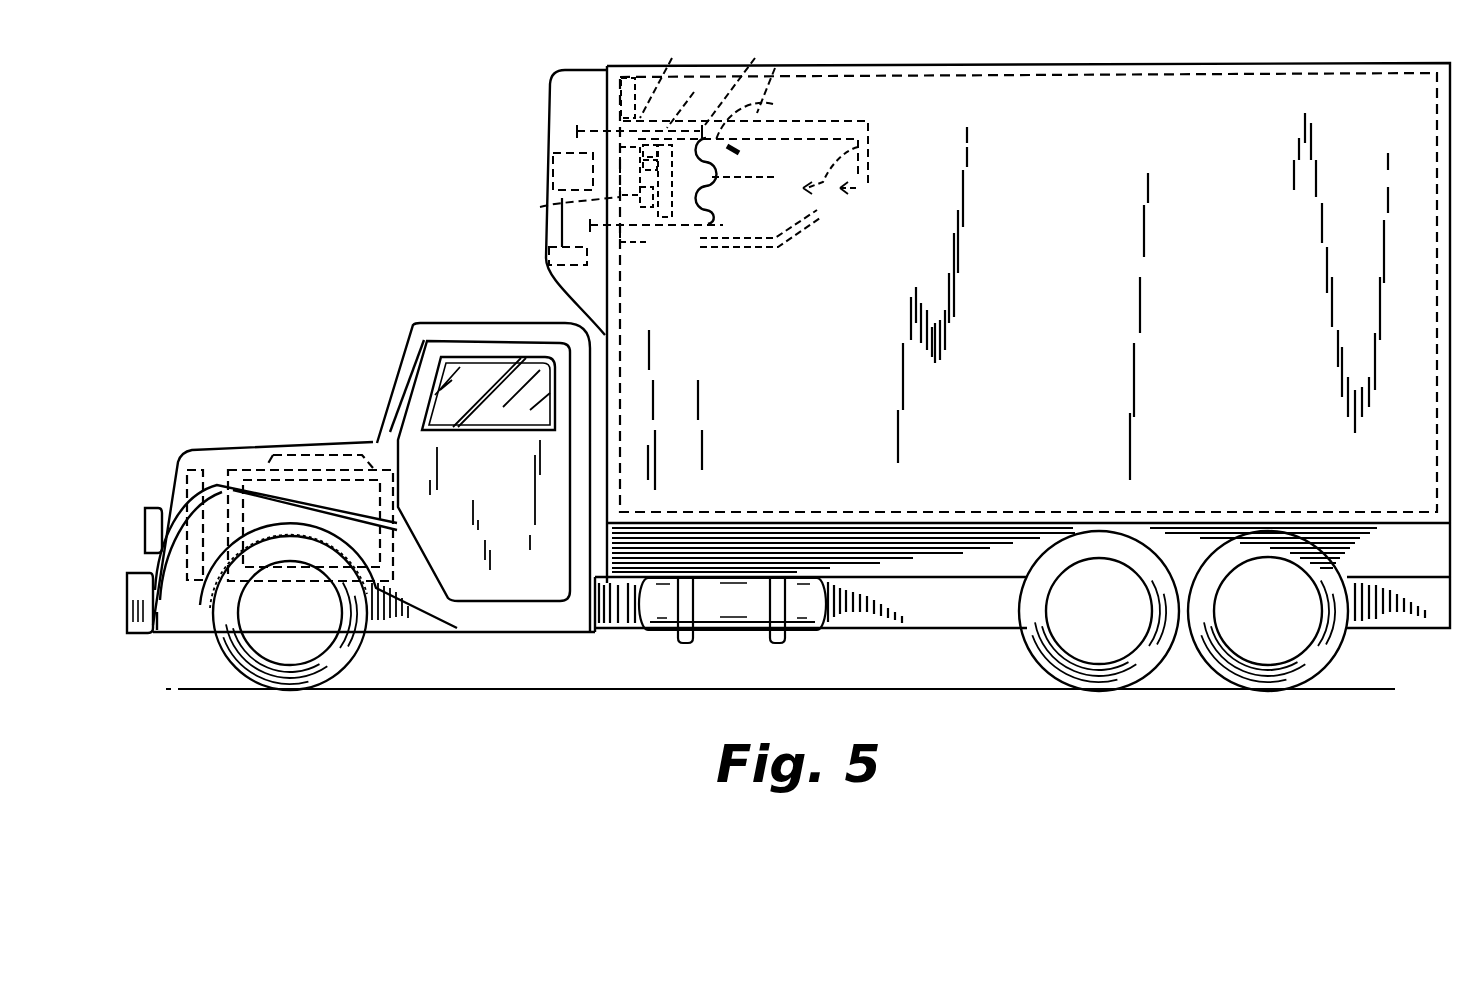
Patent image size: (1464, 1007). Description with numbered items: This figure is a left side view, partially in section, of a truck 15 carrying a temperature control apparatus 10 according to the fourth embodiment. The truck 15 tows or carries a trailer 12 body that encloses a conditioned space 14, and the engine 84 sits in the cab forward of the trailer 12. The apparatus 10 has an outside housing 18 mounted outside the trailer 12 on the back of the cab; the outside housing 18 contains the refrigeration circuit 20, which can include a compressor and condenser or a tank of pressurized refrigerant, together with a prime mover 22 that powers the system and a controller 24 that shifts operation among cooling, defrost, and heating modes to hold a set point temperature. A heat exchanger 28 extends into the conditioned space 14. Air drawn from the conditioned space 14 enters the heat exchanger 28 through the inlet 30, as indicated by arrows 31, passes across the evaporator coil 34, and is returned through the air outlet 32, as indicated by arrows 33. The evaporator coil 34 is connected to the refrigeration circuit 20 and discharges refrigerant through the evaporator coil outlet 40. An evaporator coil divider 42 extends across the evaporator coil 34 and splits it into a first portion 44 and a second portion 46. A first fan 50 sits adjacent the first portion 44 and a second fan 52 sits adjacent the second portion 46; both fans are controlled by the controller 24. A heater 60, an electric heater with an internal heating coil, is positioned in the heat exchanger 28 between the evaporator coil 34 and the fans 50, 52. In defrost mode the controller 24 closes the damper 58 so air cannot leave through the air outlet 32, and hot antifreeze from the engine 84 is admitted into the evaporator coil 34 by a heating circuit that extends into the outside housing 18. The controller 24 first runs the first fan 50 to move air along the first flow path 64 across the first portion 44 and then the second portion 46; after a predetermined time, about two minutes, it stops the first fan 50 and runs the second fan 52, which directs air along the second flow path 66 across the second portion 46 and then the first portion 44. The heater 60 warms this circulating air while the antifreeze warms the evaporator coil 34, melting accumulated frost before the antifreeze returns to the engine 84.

The temperature control apparatus 10 is at (701, 43).
The trailer 12 is at (1150, 63).
The conditioned space 14 is at (850, 97).
The truck 15 is at (436, 322).
The outside housing 18 is at (551, 78).
The refrigeration circuit 20 is at (583, 124).
The prime mover 22 is at (548, 260).
The controller 24 is at (552, 170).
The heat exchanger 28 is at (870, 118).
The inlet 30 is at (727, 240).
The arrows 31 is at (665, 238).
The air outlet 32 is at (860, 188).
The arrows 33 is at (838, 264).
The evaporator coil 34 is at (742, 80).
The evaporator coil outlet 40 is at (628, 70).
The evaporator coil divider 42 is at (754, 181).
The first portion 44 is at (718, 204).
The second portion 46 is at (762, 104).
The first fan 50 is at (540, 209).
The second fan 52 is at (656, 76).
The damper 58 is at (872, 142).
The heater 60 is at (693, 102).
The first flow path 64 is at (731, 219).
The second flow path 66 is at (742, 152).
The truck's engine 84 is at (302, 452).